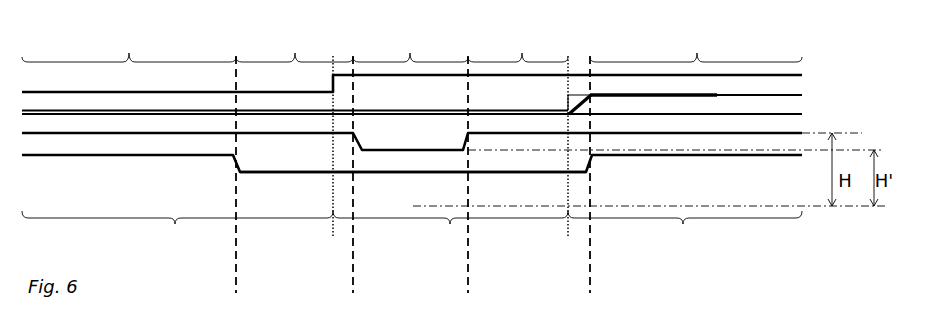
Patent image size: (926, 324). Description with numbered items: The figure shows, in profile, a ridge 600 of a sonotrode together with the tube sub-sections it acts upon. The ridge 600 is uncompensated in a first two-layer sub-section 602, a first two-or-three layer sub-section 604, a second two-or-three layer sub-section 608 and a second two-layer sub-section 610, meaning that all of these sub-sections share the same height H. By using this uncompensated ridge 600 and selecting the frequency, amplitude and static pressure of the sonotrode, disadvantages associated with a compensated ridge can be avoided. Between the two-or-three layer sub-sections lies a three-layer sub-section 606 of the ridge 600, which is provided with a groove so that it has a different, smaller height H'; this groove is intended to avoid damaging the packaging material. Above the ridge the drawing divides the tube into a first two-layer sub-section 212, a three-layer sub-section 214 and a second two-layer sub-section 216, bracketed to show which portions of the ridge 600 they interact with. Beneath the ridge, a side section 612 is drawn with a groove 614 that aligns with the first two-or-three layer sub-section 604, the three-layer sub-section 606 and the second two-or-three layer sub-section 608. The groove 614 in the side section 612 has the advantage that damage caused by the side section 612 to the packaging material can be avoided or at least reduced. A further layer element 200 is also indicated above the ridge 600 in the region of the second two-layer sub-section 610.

The upper layer / cap material 200 is at (622, 93).
The ridge 600 is at (115, 134).
The first two-layer sub-section 602 is at (129, 46).
The first two-or-three layer sub-section 604 is at (294, 46).
The three-layer sub-section 606 is at (410, 46).
The second two-or-three layer sub-section 608 is at (518, 46).
The second two-layer sub-section 610 is at (696, 46).
The side section 612 is at (185, 157).
The groove 614 is at (588, 181).
The first two-layer sub-section 212 is at (177, 231).
The three-layer sub-section 214 is at (450, 231).
The second two-layer sub-section 216 is at (685, 231).